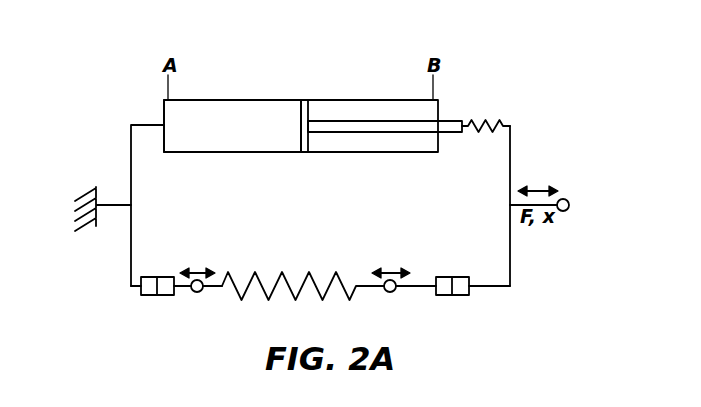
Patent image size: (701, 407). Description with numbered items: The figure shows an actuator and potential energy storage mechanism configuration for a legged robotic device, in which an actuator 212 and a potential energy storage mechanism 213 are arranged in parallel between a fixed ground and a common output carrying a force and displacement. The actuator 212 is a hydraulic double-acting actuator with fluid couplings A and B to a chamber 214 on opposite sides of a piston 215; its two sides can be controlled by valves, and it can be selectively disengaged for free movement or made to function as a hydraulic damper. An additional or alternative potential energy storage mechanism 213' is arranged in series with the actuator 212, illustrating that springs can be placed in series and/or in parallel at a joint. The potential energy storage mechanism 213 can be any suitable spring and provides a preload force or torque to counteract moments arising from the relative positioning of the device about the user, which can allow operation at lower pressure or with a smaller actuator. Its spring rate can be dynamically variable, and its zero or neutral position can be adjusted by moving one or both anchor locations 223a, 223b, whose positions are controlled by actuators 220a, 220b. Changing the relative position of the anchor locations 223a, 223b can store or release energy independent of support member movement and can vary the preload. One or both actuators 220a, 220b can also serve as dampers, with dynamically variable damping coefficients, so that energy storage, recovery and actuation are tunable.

The actuator 212 is at (297, 70).
The chamber 214 is at (234, 127).
The piston 215 is at (300, 115).
The potential energy storage mechanism 213' is at (514, 96).
The potential energy storage mechanism 213 is at (291, 252).
The actuator 220a is at (150, 297).
The actuator 220b is at (448, 296).
The anchor location 223a is at (196, 293).
The anchor location 223b is at (393, 293).